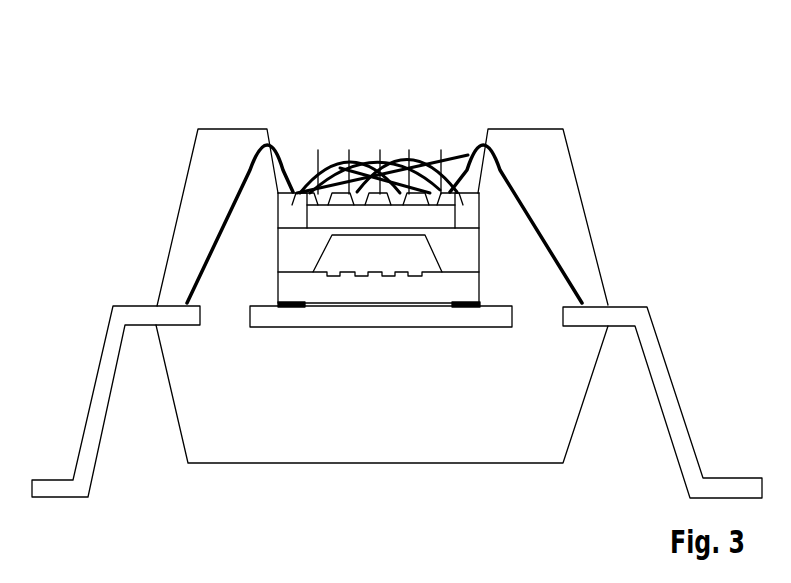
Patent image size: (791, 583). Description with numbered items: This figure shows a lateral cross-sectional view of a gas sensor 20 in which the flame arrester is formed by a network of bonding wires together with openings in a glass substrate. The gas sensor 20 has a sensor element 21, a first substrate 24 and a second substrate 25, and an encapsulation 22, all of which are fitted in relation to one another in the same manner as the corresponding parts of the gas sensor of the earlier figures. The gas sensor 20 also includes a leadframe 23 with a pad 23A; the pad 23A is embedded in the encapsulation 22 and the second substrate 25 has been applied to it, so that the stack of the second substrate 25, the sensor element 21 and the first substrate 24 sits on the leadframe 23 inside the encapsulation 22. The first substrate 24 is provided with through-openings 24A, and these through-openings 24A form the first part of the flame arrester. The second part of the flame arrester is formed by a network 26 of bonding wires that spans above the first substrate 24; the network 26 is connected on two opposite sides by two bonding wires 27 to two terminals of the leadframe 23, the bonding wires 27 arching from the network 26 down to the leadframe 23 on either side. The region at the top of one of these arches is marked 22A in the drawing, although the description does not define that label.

The gas sensor 20 is at (637, 48).
The sensor element 21 is at (460, 247).
The encapsulation 22 is at (543, 452).
The bonding wire top 22A is at (485, 140).
The leadframe 23 is at (108, 363).
The pad 23A is at (345, 316).
The first substrate 24 is at (293, 215).
The through-openings 24A is at (323, 193).
The second substrate 25 is at (468, 288).
The network of bonding wires 26 is at (396, 158).
The bonding wires 27 is at (243, 177).